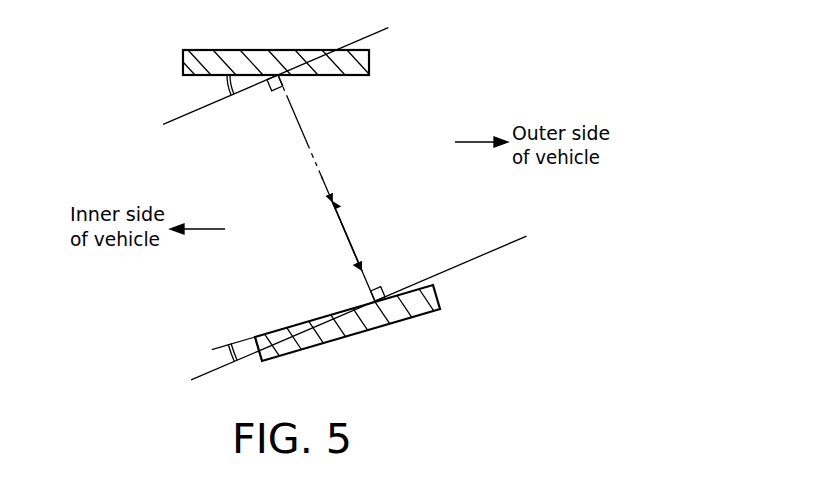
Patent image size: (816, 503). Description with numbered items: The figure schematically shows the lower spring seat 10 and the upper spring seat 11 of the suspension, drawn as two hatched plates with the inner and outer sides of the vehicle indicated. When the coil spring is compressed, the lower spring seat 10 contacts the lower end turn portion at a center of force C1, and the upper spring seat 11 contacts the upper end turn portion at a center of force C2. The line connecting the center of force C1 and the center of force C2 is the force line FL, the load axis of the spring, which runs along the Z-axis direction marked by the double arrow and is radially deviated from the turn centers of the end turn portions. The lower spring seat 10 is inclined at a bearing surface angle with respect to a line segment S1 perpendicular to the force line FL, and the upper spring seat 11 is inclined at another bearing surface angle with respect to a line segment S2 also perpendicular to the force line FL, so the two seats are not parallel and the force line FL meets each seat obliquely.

The lower spring seat 10 is at (292, 324).
The upper spring seat 11 is at (360, 78).
The line segment S1 is at (477, 257).
The line segment S2 is at (203, 109).
The center of force C1 is at (378, 329).
The center of force C2 is at (278, 73).
The force line FL is at (330, 187).
The Z-axis direction Z-axis is at (346, 236).